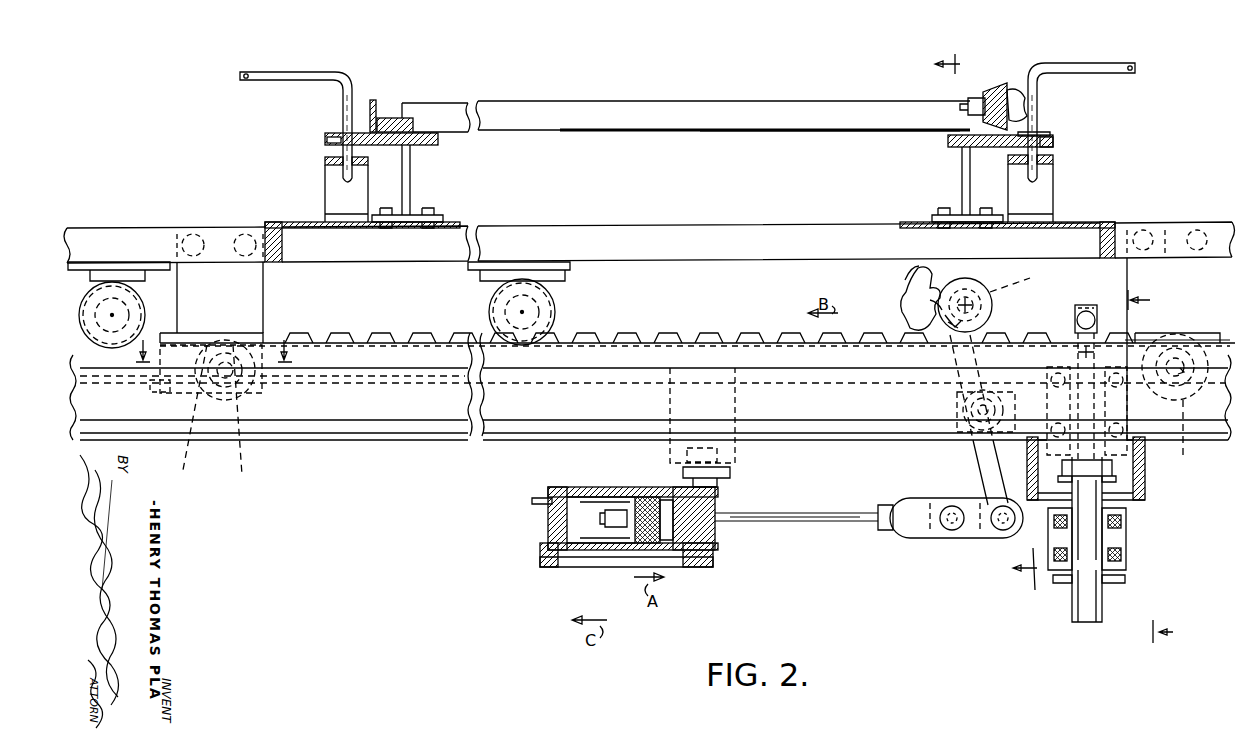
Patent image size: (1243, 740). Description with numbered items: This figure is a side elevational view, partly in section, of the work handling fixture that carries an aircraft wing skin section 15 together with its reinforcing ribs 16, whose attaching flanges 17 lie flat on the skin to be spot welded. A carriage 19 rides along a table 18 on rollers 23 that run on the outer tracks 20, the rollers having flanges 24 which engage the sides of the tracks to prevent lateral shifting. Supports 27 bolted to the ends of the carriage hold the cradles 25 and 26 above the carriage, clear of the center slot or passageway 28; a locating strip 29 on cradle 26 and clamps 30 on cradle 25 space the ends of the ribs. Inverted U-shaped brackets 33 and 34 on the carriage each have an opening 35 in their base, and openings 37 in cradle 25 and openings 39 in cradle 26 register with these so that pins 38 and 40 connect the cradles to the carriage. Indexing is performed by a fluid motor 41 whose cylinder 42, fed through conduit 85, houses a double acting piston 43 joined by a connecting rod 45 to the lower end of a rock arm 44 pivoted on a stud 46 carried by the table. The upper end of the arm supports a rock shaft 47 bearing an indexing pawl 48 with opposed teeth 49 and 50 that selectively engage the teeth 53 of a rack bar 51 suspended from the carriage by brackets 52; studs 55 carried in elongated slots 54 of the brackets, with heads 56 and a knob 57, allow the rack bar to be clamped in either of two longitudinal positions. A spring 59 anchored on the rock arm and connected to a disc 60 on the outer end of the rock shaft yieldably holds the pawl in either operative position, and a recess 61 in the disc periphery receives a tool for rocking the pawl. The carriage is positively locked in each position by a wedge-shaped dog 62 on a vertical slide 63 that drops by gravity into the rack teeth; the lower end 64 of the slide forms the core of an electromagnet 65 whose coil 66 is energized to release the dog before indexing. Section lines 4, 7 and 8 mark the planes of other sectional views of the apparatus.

The section line 4 is at (975, 322).
The section line 7 is at (211, 353).
The section line 8 is at (1158, 468).
The skin section 15 is at (674, 132).
The reinforcing ribs 16 is at (646, 108).
The attaching flanges 17 is at (564, 131).
The table 18 is at (560, 402).
The carriage 19 is at (706, 240).
The outer tracks 20 is at (84, 338).
The rollers 23 is at (132, 316).
The flanges 24 is at (552, 303).
The cradle 25 is at (1050, 136).
The cradle 26 is at (328, 134).
The supports 27 is at (413, 182).
The center slot 28 is at (946, 138).
The locating strip 29 is at (378, 117).
The clamps 30 is at (980, 88).
The inverted U-shaped bracket 33 is at (1040, 196).
The inverted U-shaped bracket 34 is at (332, 190).
The opening 35 is at (325, 164).
The openings 37 is at (1053, 144).
The pin 38 is at (1032, 88).
The openings 39 is at (340, 142).
The pin 40 is at (354, 66).
The fluid motor 41 is at (550, 521).
The cylinder 42 is at (574, 487).
The double acting piston 43 is at (652, 544).
The rock arm 44 is at (970, 472).
The connecting rod 45 is at (838, 520).
The stud 46 is at (960, 408).
The rock shaft 47 is at (1026, 280).
The indexing pawl 48 is at (912, 282).
The tooth 49 is at (914, 281).
The tooth 50 is at (918, 342).
The rack bar 51 is at (706, 326).
The brackets 52 is at (263, 320).
The teeth 53 is at (341, 342).
The elongated slots 54 is at (720, 410).
The studs 55 is at (195, 415).
The heads 56 is at (190, 391).
The knob 57 is at (205, 344).
The spring 59 is at (944, 320).
The disc 60 is at (971, 285).
The recess 61 is at (928, 296).
The wedge-shaped dog 62 is at (1086, 308).
The vertical slide 63 is at (1076, 356).
The lower end of slide 64 is at (1090, 560).
The electromagnet 65 is at (1056, 572).
The coil 66 is at (1112, 532).
The conduit 85 is at (542, 494).